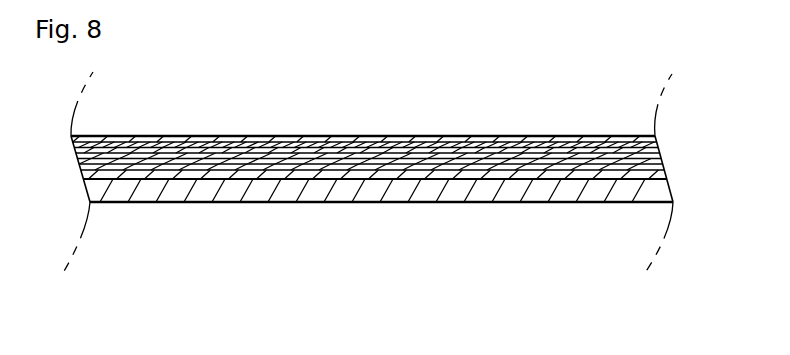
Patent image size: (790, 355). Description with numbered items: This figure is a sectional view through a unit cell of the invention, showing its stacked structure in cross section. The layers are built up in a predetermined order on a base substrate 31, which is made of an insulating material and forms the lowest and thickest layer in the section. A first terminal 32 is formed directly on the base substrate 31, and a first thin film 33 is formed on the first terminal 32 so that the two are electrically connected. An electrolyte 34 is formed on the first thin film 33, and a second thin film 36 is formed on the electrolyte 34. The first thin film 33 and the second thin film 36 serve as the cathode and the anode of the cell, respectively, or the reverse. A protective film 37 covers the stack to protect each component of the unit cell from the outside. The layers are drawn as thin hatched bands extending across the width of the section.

The substrate layer 31 is at (567, 190).
The first layer 32 is at (470, 176).
The second layer 33 is at (400, 165).
The third layer 34 is at (323, 160).
The fourth layer 36 is at (225, 150).
The top layer 37 is at (150, 142).